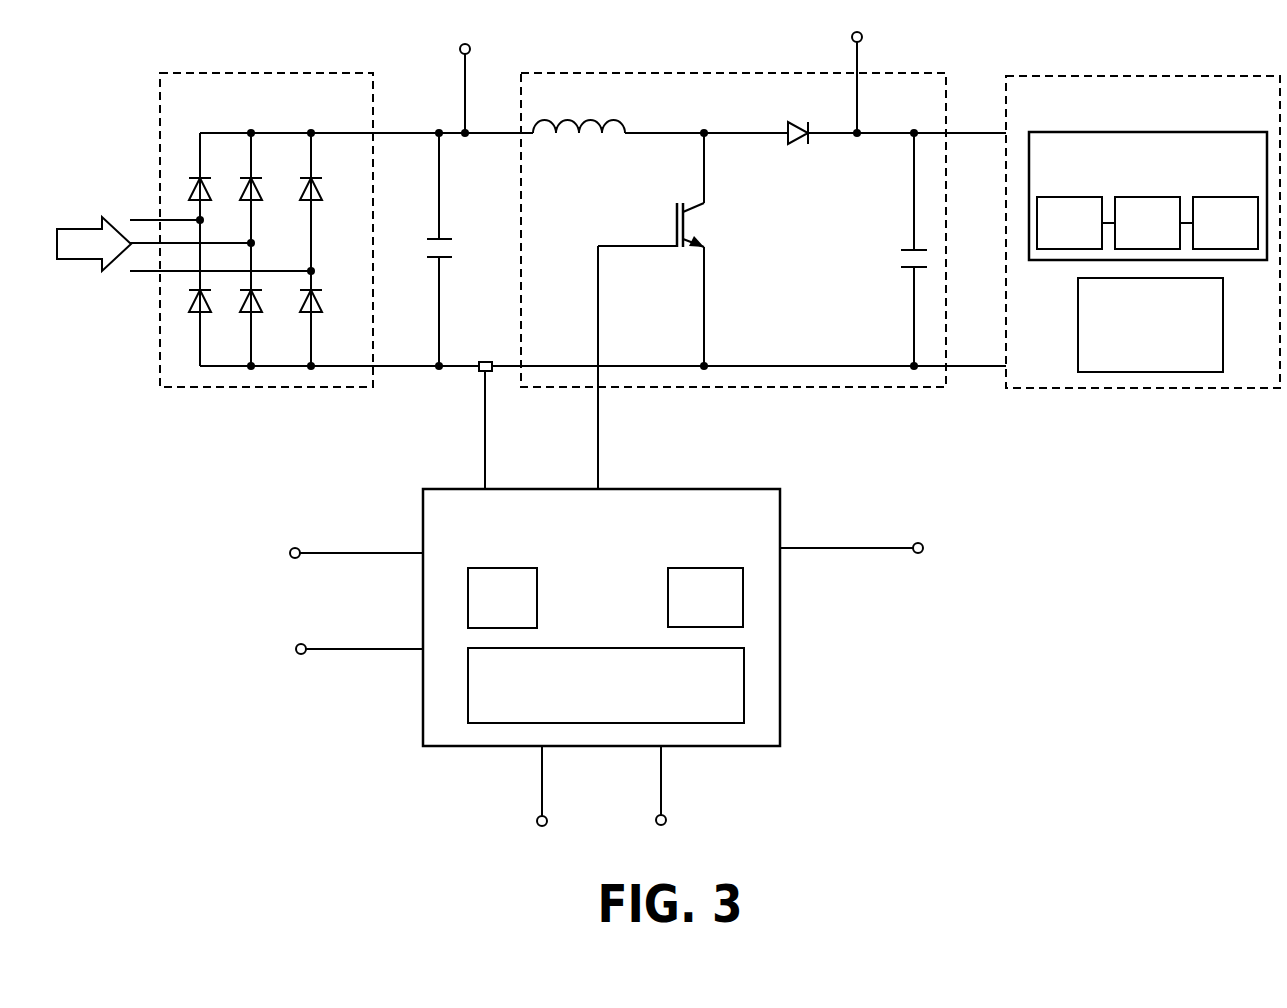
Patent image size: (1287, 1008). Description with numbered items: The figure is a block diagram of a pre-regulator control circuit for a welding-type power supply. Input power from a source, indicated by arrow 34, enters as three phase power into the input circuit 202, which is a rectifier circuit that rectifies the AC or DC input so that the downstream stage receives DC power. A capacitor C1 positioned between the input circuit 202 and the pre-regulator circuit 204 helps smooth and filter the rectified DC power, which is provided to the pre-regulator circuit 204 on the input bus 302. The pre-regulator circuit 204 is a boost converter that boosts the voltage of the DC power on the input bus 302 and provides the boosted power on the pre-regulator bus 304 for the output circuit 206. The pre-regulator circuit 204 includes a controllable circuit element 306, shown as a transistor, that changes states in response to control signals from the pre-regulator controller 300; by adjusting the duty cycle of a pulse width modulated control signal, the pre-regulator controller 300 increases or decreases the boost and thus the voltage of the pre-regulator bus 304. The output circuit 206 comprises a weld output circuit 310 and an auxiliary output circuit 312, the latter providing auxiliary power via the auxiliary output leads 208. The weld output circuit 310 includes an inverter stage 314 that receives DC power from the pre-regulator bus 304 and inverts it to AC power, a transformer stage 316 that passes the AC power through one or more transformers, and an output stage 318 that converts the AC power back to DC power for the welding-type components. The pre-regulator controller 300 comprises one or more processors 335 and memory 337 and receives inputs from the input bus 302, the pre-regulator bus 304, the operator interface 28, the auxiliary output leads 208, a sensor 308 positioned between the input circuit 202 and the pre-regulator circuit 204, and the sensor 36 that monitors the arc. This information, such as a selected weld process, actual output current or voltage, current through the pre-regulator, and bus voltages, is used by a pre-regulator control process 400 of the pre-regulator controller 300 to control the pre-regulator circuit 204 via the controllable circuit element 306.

The arrow (source of electrical power) 34 is at (102, 217).
The input circuit 202 is at (305, 108).
The pre-regulator circuit 204 is at (818, 107).
The output circuit 206 is at (1196, 111).
The auxiliary output leads 208 is at (924, 548).
The pre-regulator controller 300 is at (618, 551).
The input bus 302 is at (463, 44).
The pre-regulator bus 304 is at (866, 33).
The controllable circuit element 306 is at (675, 247).
The sensor 308 is at (485, 356).
The weld output circuit 310 is at (1135, 185).
The auxiliary output circuit 312 is at (1137, 333).
The inverter stage 314 is at (1056, 231).
The transformer stage 316 is at (1134, 231).
The output stage 318 is at (1212, 231).
The processor 335 is at (490, 621).
The memory 337 is at (692, 620).
The pre-regulator control process 400 is at (593, 703).
The sensor 36 is at (537, 821).
The operator interface 28 is at (667, 820).
The capacitor C1 is at (438, 240).